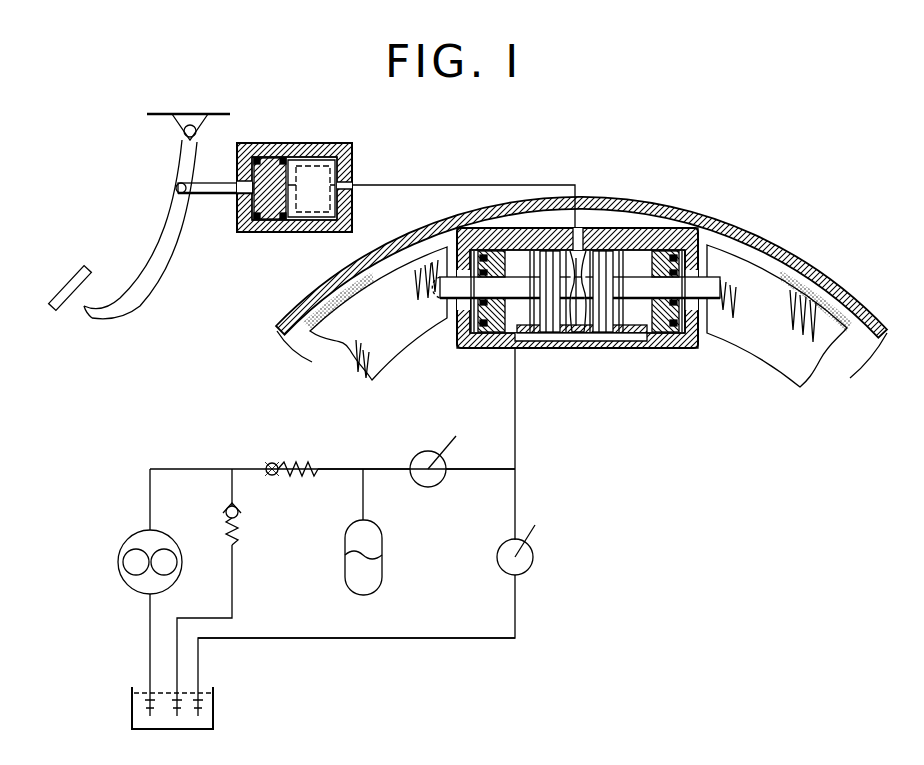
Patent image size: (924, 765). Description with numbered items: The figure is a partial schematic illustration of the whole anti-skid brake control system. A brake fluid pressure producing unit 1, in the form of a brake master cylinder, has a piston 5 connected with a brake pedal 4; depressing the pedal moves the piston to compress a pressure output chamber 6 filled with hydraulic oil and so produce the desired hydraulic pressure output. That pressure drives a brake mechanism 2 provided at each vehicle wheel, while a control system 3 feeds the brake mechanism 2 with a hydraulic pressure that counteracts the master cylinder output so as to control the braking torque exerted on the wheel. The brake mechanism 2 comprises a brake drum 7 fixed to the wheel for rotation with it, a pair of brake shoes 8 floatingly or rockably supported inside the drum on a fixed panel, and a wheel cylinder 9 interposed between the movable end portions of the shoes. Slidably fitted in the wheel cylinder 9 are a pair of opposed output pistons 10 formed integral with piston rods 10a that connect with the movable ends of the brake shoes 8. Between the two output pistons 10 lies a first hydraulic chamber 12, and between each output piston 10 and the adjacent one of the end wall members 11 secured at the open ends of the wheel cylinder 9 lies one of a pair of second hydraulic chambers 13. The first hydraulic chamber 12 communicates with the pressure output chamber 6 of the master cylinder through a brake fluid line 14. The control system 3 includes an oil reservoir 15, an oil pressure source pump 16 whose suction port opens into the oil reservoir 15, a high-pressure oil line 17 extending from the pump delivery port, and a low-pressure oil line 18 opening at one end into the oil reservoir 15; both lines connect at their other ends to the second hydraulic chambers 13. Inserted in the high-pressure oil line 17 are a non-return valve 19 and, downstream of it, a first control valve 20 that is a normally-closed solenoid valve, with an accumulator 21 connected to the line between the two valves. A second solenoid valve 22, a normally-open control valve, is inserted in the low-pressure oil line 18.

The brake fluid pressure producing unit 1 is at (280, 143).
The brake mechanism 2 is at (581, 266).
The control system 3 is at (192, 470).
The brake pedal 4 is at (76, 275).
The piston 5 is at (287, 222).
The pressure output chamber 6 is at (321, 208).
The brake drum 7 is at (756, 240).
The brake shoes 8 is at (405, 355).
The wheel cylinder 9 is at (604, 245).
The output pistons 10 is at (550, 333).
The piston rods 10a is at (448, 318).
The end wall members 11 is at (482, 333).
The first hydraulic chamber 12 is at (578, 333).
The second hydraulic chambers 13 is at (527, 333).
The brake fluid line 14 is at (431, 185).
The oil reservoir 15 is at (213, 707).
The oil pressure source pump 16 is at (128, 538).
The high-pressure oil line 17 is at (337, 469).
The low-pressure oil line 18 is at (284, 638).
The non-return valve 19 is at (274, 462).
The first control valve 20 is at (445, 453).
The accumulator 21 is at (382, 544).
The second solenoid valve 22 is at (533, 557).